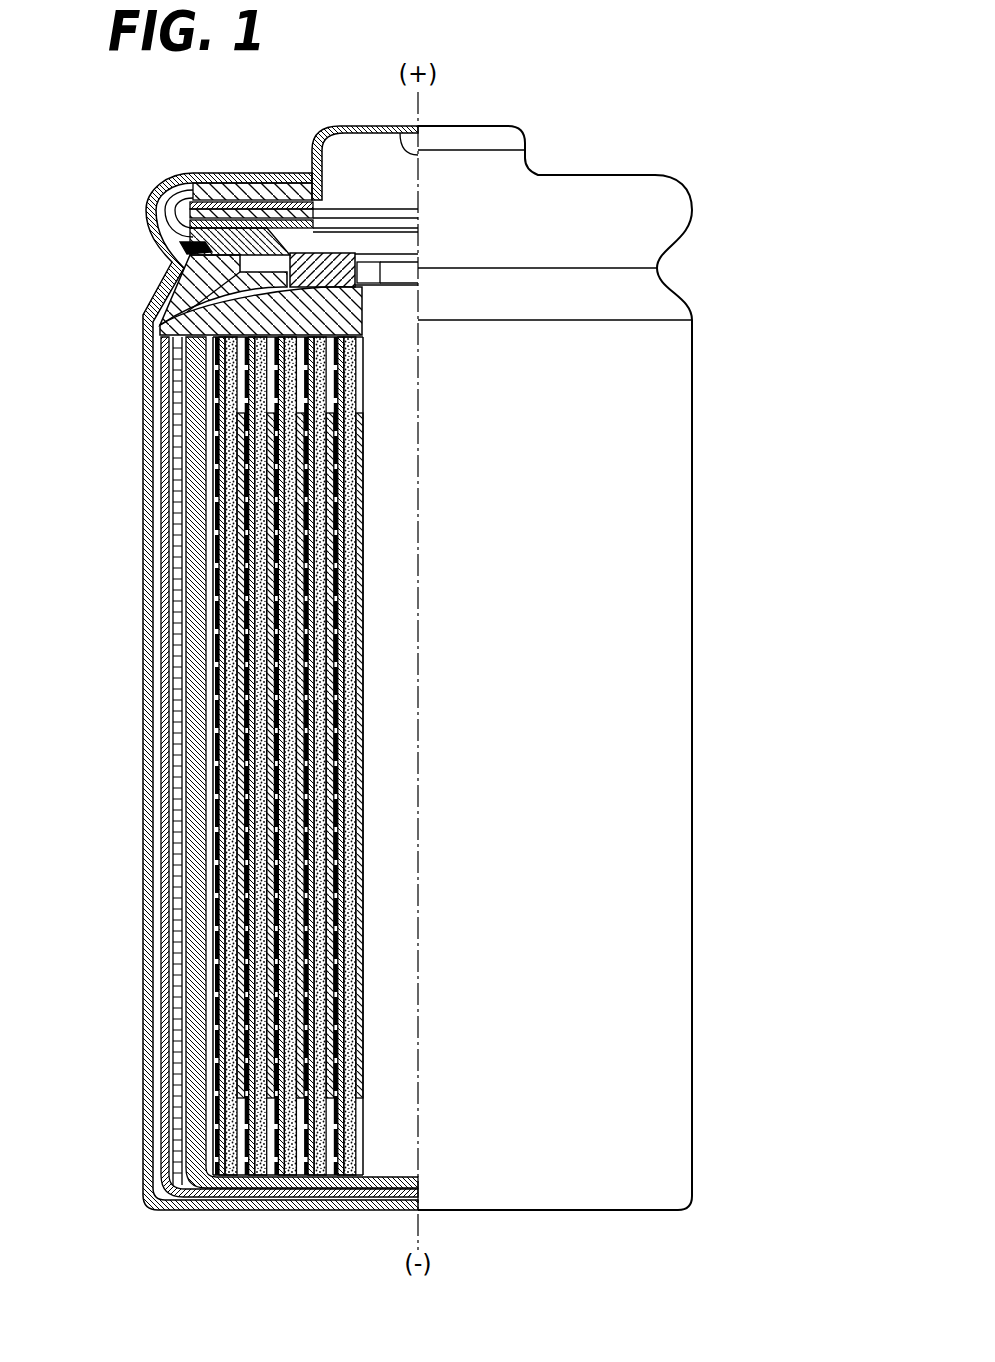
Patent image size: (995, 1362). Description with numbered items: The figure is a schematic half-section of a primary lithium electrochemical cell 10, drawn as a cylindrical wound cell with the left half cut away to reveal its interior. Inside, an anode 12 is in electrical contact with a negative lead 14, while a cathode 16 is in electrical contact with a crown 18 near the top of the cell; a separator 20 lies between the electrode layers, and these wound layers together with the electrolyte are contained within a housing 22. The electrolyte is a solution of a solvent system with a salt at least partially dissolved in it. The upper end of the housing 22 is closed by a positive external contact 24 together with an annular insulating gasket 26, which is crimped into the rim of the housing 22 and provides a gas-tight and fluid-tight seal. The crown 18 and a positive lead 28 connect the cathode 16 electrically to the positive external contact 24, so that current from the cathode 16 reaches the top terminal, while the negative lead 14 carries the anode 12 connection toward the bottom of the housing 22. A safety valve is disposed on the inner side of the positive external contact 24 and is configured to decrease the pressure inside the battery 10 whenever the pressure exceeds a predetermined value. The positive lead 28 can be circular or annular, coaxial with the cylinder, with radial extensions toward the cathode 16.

The primary lithium electrochemical cell 10 is at (613, 126).
The anode 12 is at (240, 428).
The negative lead 14 is at (200, 1092).
The cathode 16 is at (230, 592).
The crown 18 is at (240, 313).
The separator 20 is at (216, 507).
The housing 22 is at (268, 1212).
The positive external contact 24 is at (372, 125).
The annular insulating gasket 26 is at (190, 248).
The positive lead 28 is at (318, 266).